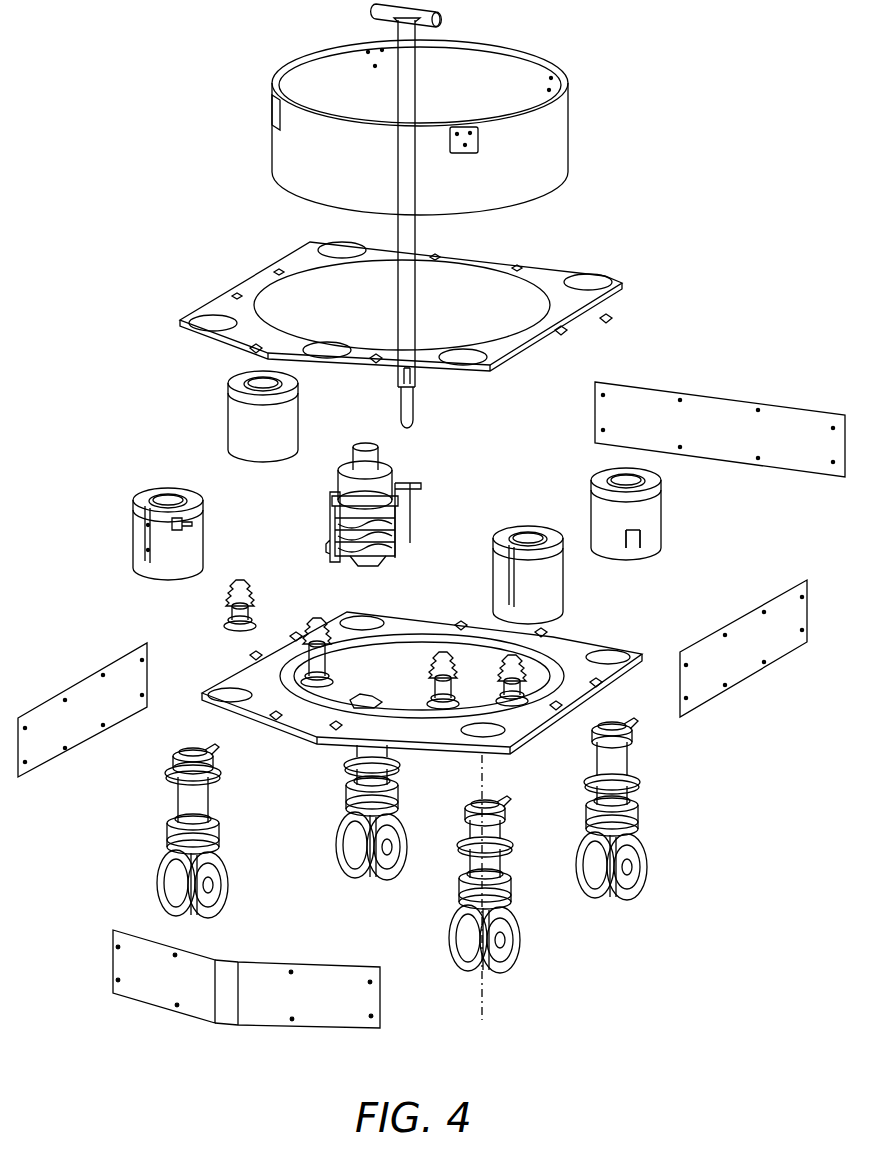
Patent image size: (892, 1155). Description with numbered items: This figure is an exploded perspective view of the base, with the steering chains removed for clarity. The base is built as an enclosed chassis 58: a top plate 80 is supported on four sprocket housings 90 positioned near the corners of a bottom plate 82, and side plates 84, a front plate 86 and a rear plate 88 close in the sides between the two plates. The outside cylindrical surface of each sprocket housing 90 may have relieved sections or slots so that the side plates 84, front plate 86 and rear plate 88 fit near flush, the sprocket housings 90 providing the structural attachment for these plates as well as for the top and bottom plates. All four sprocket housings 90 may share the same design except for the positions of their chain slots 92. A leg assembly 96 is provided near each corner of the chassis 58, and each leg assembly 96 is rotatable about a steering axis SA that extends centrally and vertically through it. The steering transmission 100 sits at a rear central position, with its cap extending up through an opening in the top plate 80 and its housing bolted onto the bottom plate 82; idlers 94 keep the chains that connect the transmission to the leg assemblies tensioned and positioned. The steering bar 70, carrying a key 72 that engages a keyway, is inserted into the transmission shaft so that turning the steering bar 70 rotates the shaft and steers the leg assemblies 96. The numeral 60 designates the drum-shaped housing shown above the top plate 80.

The chassis 58 is at (738, 312).
The drum housing 60 is at (556, 135).
The steering bar 70 is at (412, 222).
The key 72 is at (412, 377).
The top plate 80 is at (545, 270).
The bottom plate 82 is at (615, 688).
The side plates 84 is at (45, 705).
The front plate 86 is at (720, 410).
The rear plate 88 is at (125, 962).
The sprocket housings 90 is at (238, 412).
The chain slots 92 is at (190, 526).
The idlers 94 is at (300, 665).
The leg assembly 96 is at (185, 798).
The steering transmission 100 is at (402, 472).
The steering axis SA is at (565, 1004).